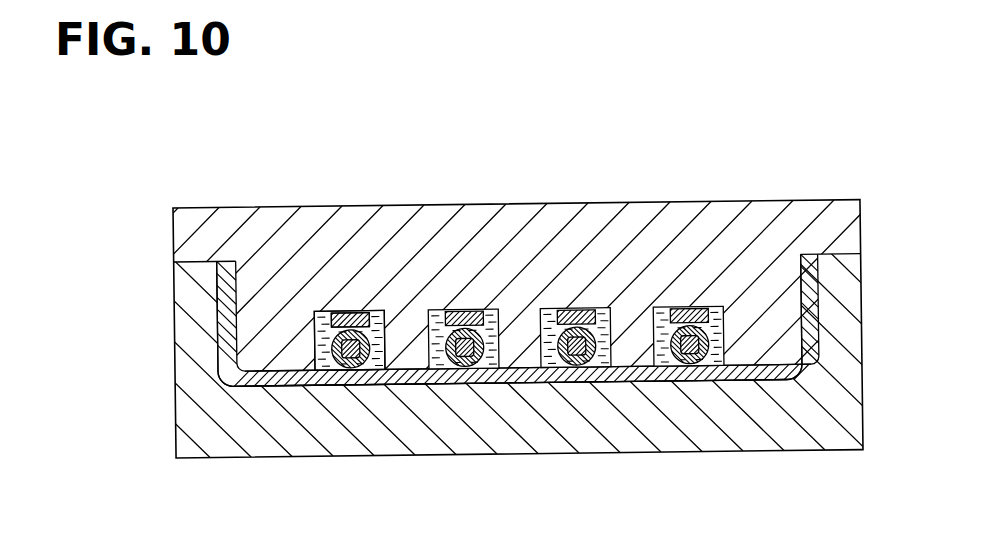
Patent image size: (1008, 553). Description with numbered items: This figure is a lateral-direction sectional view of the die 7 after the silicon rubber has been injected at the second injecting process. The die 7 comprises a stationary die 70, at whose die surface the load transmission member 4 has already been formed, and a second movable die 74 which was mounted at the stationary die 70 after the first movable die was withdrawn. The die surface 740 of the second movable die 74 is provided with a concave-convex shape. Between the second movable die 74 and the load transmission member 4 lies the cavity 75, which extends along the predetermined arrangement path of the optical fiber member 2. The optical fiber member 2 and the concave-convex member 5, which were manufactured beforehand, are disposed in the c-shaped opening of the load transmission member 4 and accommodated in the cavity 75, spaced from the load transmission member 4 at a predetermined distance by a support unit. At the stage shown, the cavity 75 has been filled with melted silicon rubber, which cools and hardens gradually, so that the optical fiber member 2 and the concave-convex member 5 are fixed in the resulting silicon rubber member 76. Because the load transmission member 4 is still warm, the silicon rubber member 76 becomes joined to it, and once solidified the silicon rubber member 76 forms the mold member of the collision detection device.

The die 7 is at (768, 140).
The stationary die 70 is at (630, 440).
The second movable die 74 is at (641, 220).
The silicon rubber member 76 is at (368, 378).
The die surface 740 is at (298, 380).
The load transmission member 4 is at (500, 378).
The optical fiber member 2 is at (330, 350).
The concave-convex member 5 is at (350, 313).
The cavity 75 is at (368, 338).